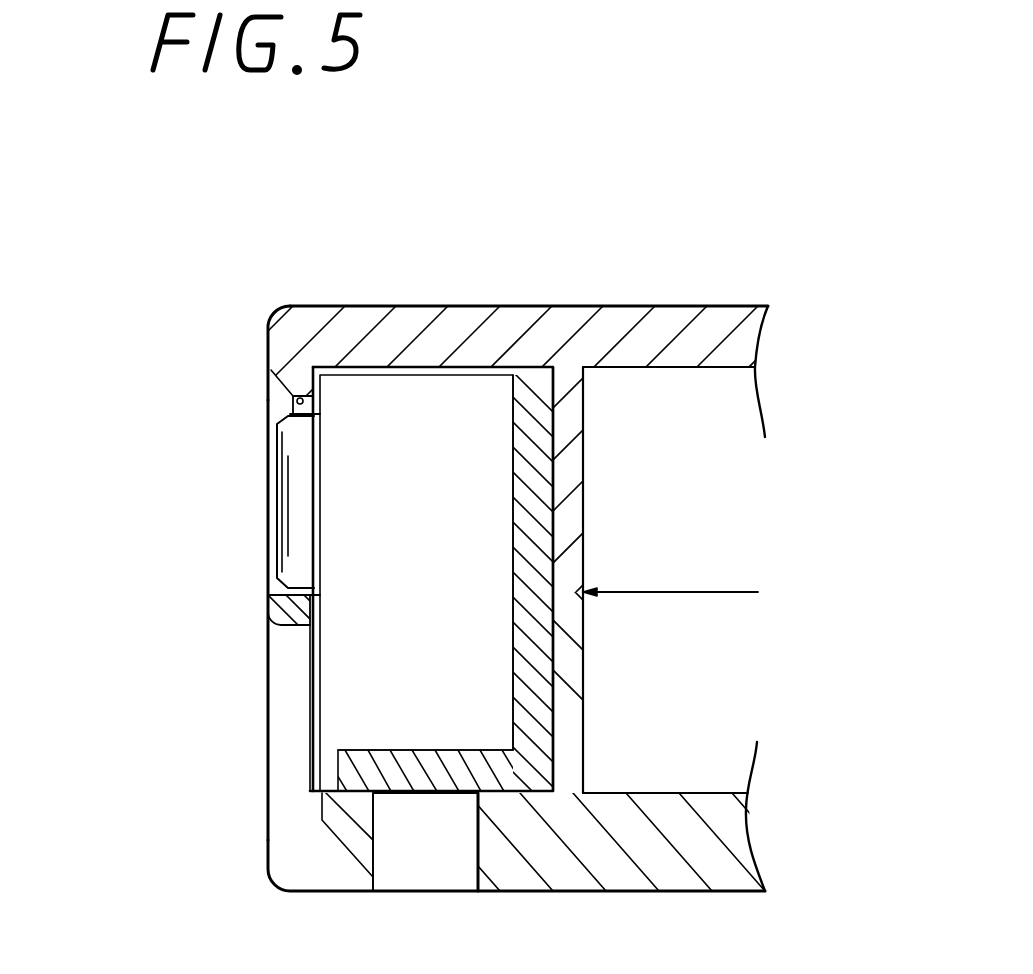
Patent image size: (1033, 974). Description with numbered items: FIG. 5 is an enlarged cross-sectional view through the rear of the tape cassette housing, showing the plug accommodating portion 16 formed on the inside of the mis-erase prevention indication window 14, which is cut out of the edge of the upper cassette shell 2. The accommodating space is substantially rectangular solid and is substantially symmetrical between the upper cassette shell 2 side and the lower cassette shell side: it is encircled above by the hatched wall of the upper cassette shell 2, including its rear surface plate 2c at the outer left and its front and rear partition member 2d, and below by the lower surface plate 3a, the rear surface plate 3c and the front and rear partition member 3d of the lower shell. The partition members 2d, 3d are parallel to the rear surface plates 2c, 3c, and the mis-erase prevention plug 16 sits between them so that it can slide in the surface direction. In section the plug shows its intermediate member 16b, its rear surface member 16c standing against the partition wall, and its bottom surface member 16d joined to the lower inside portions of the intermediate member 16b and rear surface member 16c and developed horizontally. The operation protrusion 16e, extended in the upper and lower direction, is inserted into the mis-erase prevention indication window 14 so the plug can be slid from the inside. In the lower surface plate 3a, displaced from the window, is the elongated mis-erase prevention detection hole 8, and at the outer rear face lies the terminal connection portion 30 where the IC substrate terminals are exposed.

The upper cassette shell 2 is at (660, 337).
The rear surface plate 2c is at (268, 341).
The front and rear partition member 2d is at (572, 508).
The lower surface plate 3a is at (673, 862).
The rear surface plate 3c is at (268, 863).
The front and rear partition member 3d is at (572, 708).
The mis-erase prevention detection hole 8 is at (478, 847).
The mis-erase prevention indication window 14 is at (293, 404).
The mis-erase prevention plug 16 is at (342, 521).
The intermediate member 16b is at (414, 372).
The rear surface member 16c is at (533, 373).
The bottom surface member 16d is at (338, 769).
The operation protrusion 16e is at (297, 478).
The terminal connection portion 30 is at (257, 702).